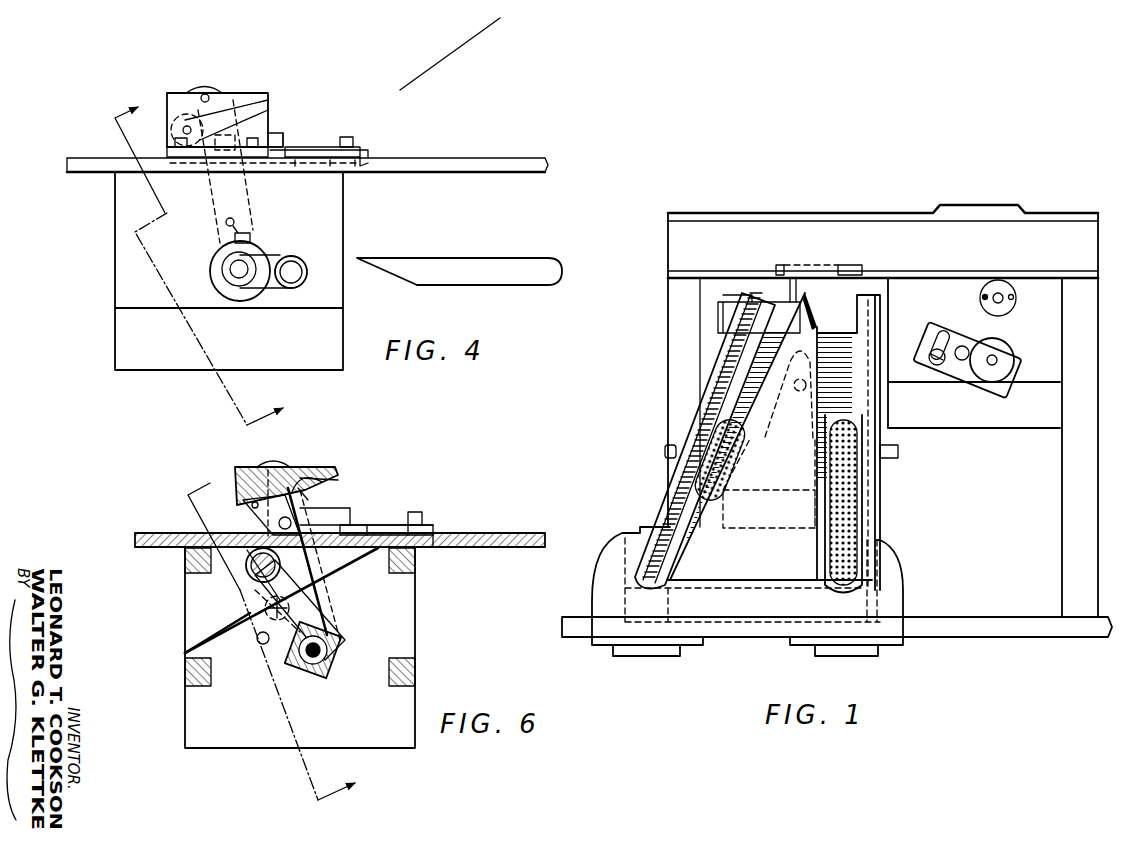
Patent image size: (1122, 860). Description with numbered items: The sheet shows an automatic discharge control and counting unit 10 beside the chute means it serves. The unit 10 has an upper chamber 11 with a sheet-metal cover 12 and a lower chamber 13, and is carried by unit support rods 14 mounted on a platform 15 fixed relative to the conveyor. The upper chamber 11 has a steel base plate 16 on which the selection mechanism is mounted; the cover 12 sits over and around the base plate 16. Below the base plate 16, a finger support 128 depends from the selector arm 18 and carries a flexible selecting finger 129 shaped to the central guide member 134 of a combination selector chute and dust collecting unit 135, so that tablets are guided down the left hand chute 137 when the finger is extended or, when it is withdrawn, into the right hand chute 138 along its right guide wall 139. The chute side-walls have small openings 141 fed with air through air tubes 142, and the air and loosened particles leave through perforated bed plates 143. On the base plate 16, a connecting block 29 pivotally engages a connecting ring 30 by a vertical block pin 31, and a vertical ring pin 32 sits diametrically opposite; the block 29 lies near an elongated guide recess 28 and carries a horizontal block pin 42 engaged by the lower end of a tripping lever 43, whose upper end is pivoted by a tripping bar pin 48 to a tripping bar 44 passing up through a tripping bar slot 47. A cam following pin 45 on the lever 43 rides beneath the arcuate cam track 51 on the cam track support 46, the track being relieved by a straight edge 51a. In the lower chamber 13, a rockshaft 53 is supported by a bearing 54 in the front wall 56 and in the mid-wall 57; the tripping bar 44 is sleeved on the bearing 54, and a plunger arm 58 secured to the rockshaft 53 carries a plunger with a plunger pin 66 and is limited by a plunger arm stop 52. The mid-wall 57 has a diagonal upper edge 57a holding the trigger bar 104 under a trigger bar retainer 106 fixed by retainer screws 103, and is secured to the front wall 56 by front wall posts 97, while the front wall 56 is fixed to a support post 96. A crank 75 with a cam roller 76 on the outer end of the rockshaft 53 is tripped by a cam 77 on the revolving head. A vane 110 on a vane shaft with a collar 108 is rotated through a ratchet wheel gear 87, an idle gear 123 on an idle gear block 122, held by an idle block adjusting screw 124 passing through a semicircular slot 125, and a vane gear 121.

In FIG. 1, the discharge control and counting unit 10 is at (885, 196).
In FIG. 1, the upper chamber 11 is at (750, 218).
In FIG. 1, the cover 12 is at (1025, 233).
In FIG. 1, the lower chamber 13 is at (907, 290).
In FIG. 4, the lower chamber 13 is at (100, 277).
In FIG. 1, the unit support rods 14 is at (680, 300).
In FIG. 1, the platform 15 is at (1008, 630).
In FIG. 1, the base plate 16 is at (668, 272).
In FIG. 4, the base plate 16 is at (90, 165).
In FIG. 6, the base plate 16 is at (140, 548).
In FIG. 1, the selector arm 18 is at (850, 265).
In FIG. 4, the elongated guide recess 28 is at (360, 174).
In FIG. 6, the elongated guide recess 28 is at (433, 548).
In FIG. 4, the connecting block 29 is at (280, 140).
In FIG. 6, the connecting block 29 is at (347, 522).
In FIG. 4, the connecting ring 30 is at (362, 149).
In FIG. 6, the connecting ring 30 is at (433, 528).
In FIG. 4, the vertical block pin 31 is at (293, 152).
In FIG. 6, the vertical block pin 31 is at (372, 530).
In FIG. 4, the vertical ring pin 32 is at (348, 137).
In FIG. 6, the vertical ring pin 32 is at (420, 512).
In FIG. 4, the horizontal block pin 42 is at (210, 142).
In FIG. 6, the horizontal block pin 42 is at (314, 519).
In FIG. 4, the tripping lever 43 is at (187, 115).
In FIG. 6, the tripping lever 43 is at (255, 515).
In FIG. 4, the tripping bar 44 is at (212, 94).
In FIG. 6, the tripping bar 44 is at (283, 466).
In FIG. 4, the cam following pin 45 is at (183, 130).
In FIG. 6, the cam following pin 45 is at (248, 502).
In FIG. 4, the cam track support 46 is at (266, 104).
In FIG. 6, the cam track support 46 is at (327, 470).
In FIG. 4, the tripping bar slot 47 is at (268, 172).
In FIG. 6, the tripping bar slot 47 is at (338, 550).
In FIG. 4, the tripping bar pin 48 is at (204, 93).
In FIG. 6, the tripping bar pin 48 is at (272, 466).
In FIG. 6, the cam track 51 is at (310, 500).
In FIG. 4, the straight edge 51a is at (273, 109).
In FIG. 6, the straight edge 51a is at (337, 482).
In FIG. 6, the plunger arm stop 52 is at (255, 645).
In FIG. 4, the rockshaft 53 is at (258, 262).
In FIG. 6, the rockshaft 53 is at (322, 668).
In FIG. 4, the bearing 54 is at (250, 250).
In FIG. 6, the bearing 54 is at (306, 672).
In FIG. 4, the front wall 56 is at (205, 228).
In FIG. 4, the mid-wall 57 is at (183, 353).
In FIG. 6, the mid-wall 57 is at (407, 628).
In FIG. 6, the upper edge 57a is at (358, 560).
In FIG. 6, the plunger arm 58 is at (283, 652).
In FIG. 6, the plunger pin 66 is at (250, 640).
In FIG. 4, the crank 75 is at (268, 281).
In FIG. 4, the cam roller 76 is at (307, 277).
In FIG. 4, the cam 77 is at (462, 265).
In FIG. 1, the ratchet wheel gear 87 is at (962, 346).
In FIG. 6, the support post 96 is at (185, 562).
In FIG. 6, the front wall posts 97 is at (185, 676).
In FIG. 6, the retainer screws 103 is at (252, 604).
In FIG. 6, the trigger bar 104 is at (300, 600).
In FIG. 6, the trigger bar retainer 106 is at (248, 613).
In FIG. 6, the collar 108 is at (248, 573).
In FIG. 6, the vane 110 is at (243, 587).
In FIG. 1, the vane gear 121 is at (1010, 282).
In FIG. 1, the idle gear block 122 is at (957, 370).
In FIG. 1, the idle gear 123 is at (1000, 348).
In FIG. 1, the idle block adjusting screw 124 is at (933, 365).
In FIG. 1, the semicircular slot 125 is at (940, 333).
In FIG. 1, the finger support 128 is at (790, 290).
In FIG. 1, the selecting finger 129 is at (772, 313).
In FIG. 1, the central guide member 134 is at (787, 545).
In FIG. 1, the combination selector chute and dust collecting unit 135 is at (640, 452).
In FIG. 1, the left hand chute 137 is at (735, 373).
In FIG. 1, the right hand chute 138 is at (852, 372).
In FIG. 1, the right guide wall 139 is at (860, 312).
In FIG. 1, the small openings 141 is at (813, 447).
In FIG. 1, the air tubes 142 is at (665, 448).
In FIG. 1, the perforated bed plates 143 is at (693, 500).